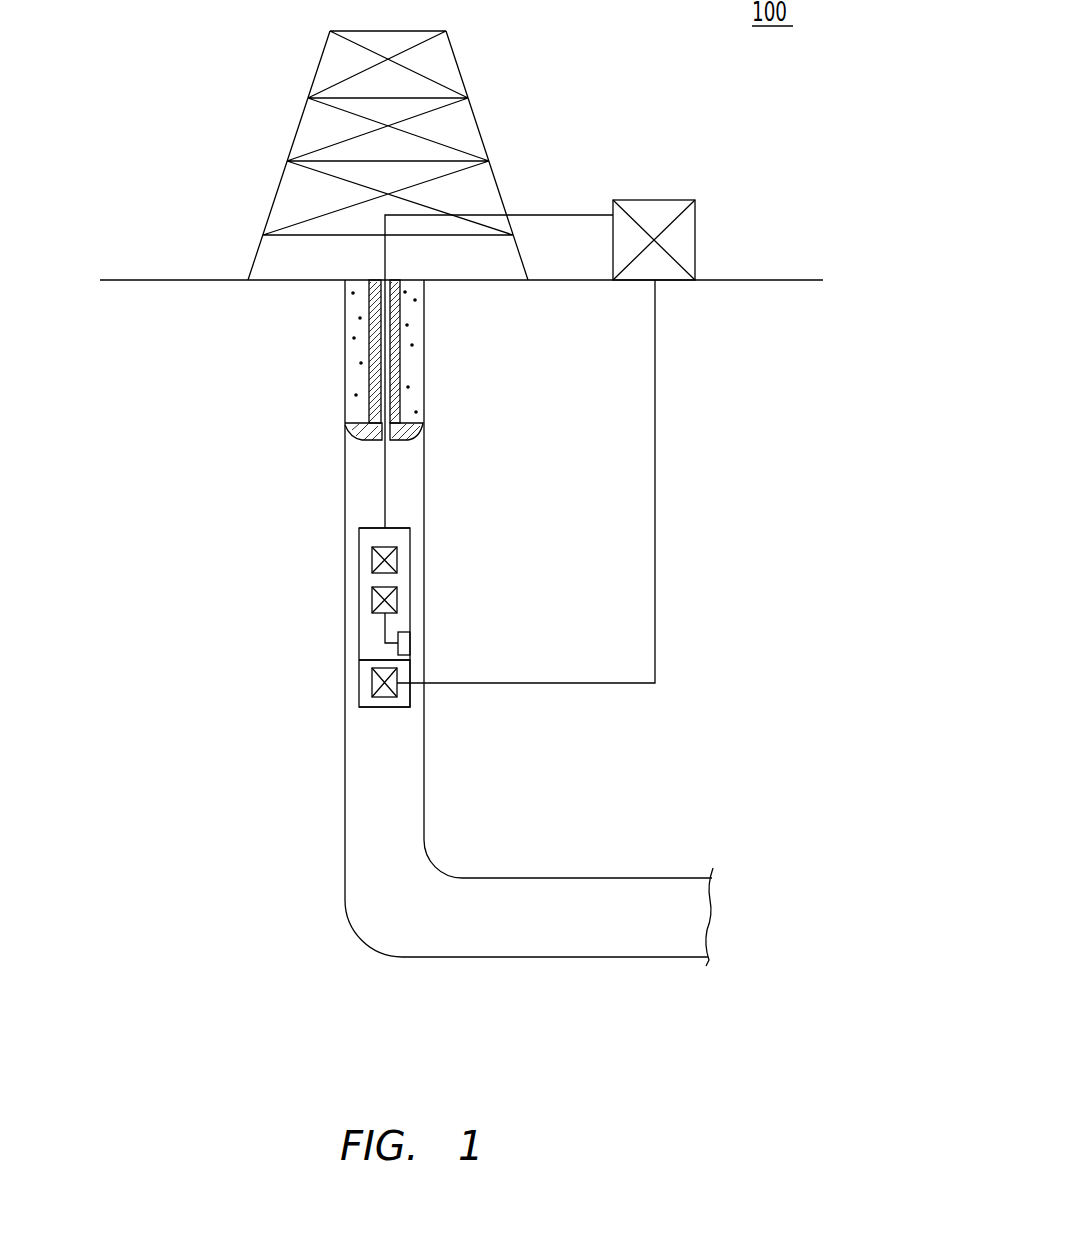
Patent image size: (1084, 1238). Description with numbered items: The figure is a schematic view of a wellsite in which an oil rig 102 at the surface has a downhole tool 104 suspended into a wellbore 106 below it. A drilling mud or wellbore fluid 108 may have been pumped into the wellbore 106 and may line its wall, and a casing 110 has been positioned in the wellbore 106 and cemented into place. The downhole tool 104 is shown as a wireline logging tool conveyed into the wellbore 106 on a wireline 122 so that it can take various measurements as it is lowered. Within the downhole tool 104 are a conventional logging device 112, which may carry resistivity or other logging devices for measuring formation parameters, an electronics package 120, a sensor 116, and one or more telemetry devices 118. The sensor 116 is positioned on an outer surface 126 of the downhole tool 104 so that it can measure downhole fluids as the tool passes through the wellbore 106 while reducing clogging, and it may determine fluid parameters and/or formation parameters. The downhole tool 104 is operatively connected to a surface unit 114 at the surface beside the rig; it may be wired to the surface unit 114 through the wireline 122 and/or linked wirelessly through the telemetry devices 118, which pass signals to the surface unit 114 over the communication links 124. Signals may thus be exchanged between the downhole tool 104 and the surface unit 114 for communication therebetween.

The oil rig 102 is at (475, 113).
The downhole tool 104 is at (358, 562).
The wellbore 106 is at (425, 510).
The wellbore fluid 108 is at (415, 665).
The casing 110 is at (402, 360).
The conventional logging device 112 is at (398, 558).
The surface unit 114 is at (697, 228).
The sensor 116 is at (412, 640).
The telemetry device 118 is at (403, 695).
The electronics package 120 is at (398, 598).
The wireline 122 is at (386, 468).
The communication link 124 is at (656, 538).
The outer surface 126 is at (358, 640).